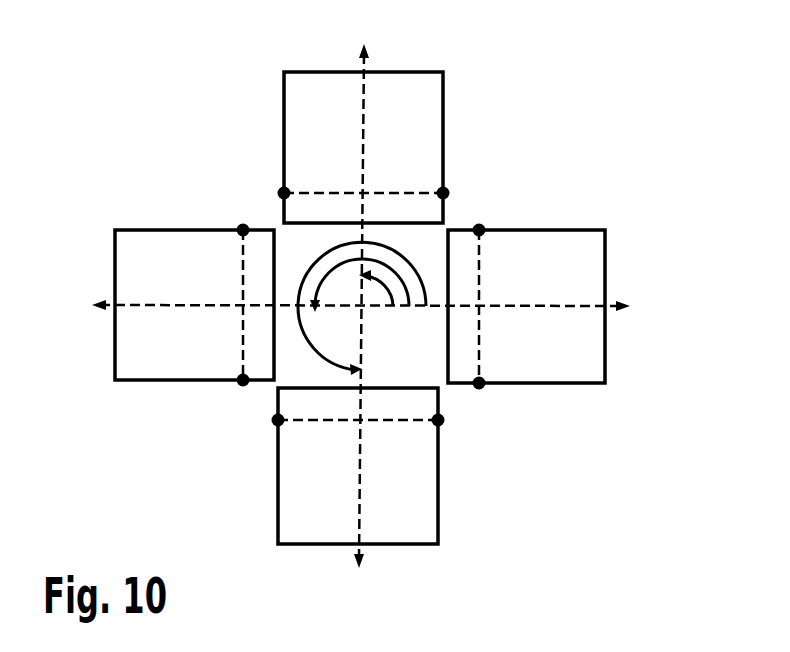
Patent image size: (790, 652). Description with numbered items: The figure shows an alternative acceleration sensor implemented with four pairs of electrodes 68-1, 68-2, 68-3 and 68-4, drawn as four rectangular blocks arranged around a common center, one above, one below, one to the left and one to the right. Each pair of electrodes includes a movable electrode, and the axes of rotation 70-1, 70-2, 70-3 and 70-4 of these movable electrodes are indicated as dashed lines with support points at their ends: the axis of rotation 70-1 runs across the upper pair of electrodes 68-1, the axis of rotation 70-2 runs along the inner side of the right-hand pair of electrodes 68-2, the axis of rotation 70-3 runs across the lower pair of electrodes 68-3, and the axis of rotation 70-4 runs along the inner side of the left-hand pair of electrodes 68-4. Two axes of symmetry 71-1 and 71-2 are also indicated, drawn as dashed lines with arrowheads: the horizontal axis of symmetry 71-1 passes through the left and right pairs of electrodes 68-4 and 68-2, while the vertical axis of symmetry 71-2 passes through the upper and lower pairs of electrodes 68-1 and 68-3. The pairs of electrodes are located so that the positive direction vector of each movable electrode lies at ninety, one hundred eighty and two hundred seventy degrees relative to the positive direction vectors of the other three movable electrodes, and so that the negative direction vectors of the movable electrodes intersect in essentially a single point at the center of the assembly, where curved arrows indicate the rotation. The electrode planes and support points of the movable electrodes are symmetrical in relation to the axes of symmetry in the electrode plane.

The pair of electrodes 68-1 is at (290, 120).
The pair of electrodes 68-2 is at (465, 228).
The pair of electrodes 68-3 is at (438, 480).
The pair of electrodes 68-4 is at (163, 382).
The axis of rotation 70-1 is at (310, 193).
The axis of rotation 70-2 is at (478, 300).
The axis of rotation 70-3 is at (413, 423).
The axis of rotation 70-4 is at (243, 342).
The axis of symmetry 71-1 is at (622, 300).
The axis of symmetry 71-2 is at (360, 553).